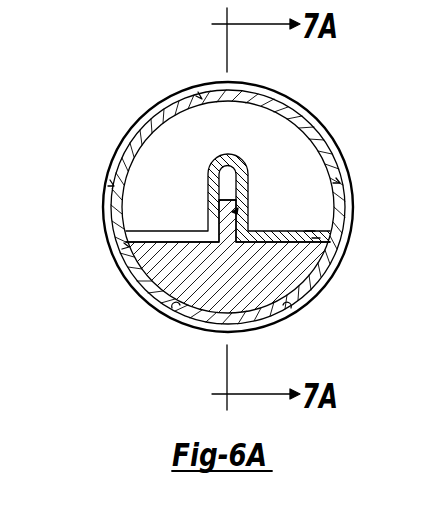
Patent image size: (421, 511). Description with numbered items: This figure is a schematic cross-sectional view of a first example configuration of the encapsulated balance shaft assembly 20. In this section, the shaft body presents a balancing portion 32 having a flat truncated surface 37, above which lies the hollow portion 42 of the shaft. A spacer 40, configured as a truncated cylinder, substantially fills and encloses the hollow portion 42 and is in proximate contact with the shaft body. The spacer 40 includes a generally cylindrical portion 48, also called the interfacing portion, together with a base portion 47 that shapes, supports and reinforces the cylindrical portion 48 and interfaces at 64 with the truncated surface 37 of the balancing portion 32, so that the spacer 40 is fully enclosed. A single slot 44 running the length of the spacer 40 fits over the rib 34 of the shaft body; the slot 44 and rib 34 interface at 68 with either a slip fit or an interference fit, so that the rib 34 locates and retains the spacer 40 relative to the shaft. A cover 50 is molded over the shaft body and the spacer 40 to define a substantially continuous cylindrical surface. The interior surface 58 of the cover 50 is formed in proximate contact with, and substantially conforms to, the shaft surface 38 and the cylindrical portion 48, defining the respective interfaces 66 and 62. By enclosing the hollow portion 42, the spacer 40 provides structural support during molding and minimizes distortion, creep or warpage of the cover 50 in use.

The shaft assembly 20 is at (118, 84).
The balancing portion 32 is at (133, 280).
The rib 34 is at (225, 222).
The truncated surface 37 is at (125, 246).
The shaft surface 38 is at (289, 306).
The spacer 40 is at (112, 183).
The hollow portion 42 is at (242, 135).
The slot 44 is at (208, 183).
The base portion 47 is at (310, 232).
The cylindrical portion 48 is at (326, 130).
The cover 50 is at (305, 100).
The interior surface 58 is at (200, 98).
The interface 62 is at (337, 180).
The interface 64 is at (313, 238).
The interface 66 is at (176, 306).
The interface 68 is at (234, 212).